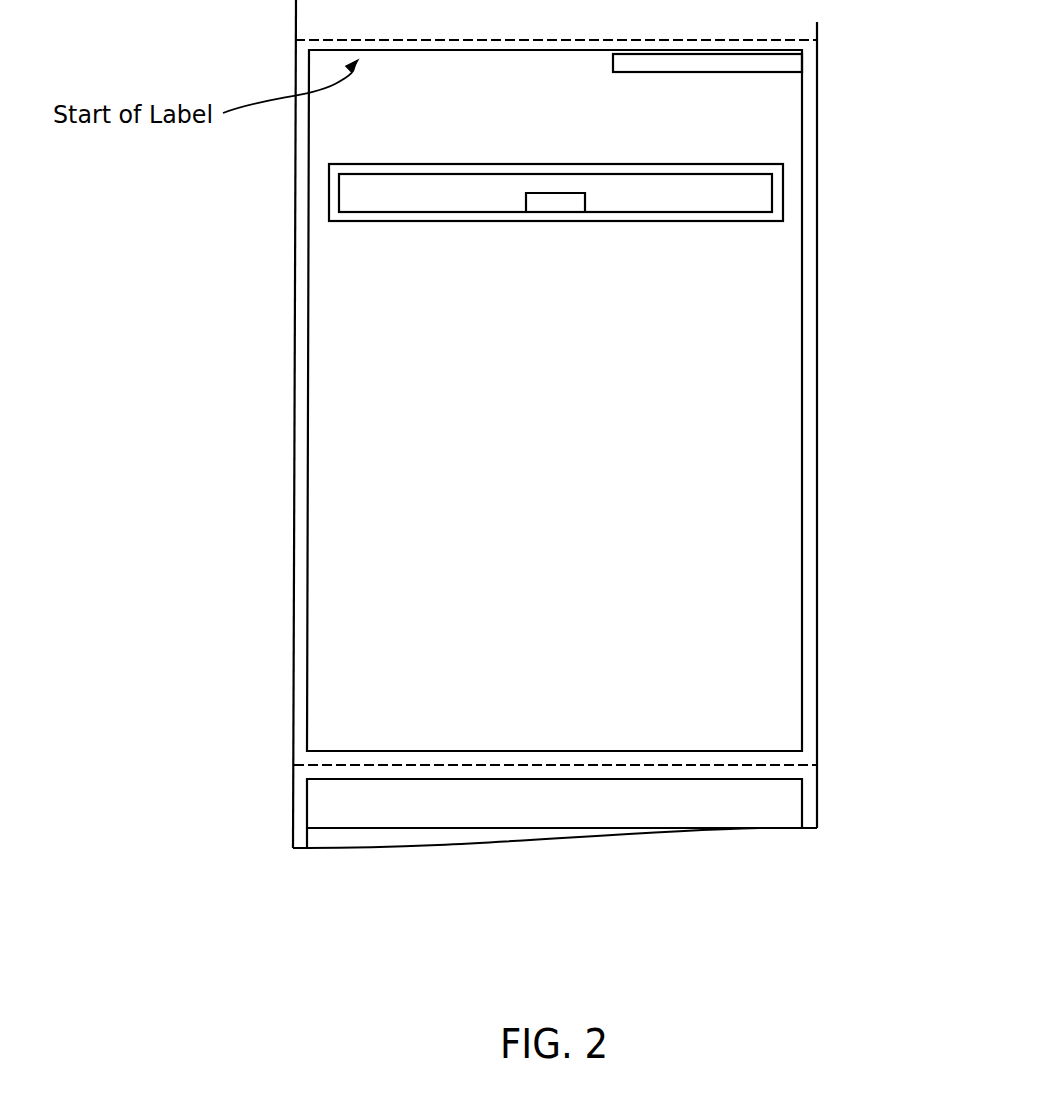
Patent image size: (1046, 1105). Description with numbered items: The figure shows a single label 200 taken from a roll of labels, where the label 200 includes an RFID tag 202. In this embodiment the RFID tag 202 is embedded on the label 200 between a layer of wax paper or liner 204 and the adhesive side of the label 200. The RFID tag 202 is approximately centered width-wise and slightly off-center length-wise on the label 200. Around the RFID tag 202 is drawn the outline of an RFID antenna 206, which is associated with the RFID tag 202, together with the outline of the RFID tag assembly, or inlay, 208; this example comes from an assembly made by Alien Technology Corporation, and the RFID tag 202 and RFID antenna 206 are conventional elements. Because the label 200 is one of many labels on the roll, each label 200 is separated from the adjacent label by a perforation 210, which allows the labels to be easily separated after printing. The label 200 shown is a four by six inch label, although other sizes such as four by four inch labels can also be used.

The label 200 is at (554, 400).
The RFID tag 202 is at (537, 218).
The liner 204 is at (818, 387).
The RFID antenna 206 is at (633, 228).
The RFID tag assembly (inlay) 208 is at (728, 238).
The perforation 210 is at (804, 774).